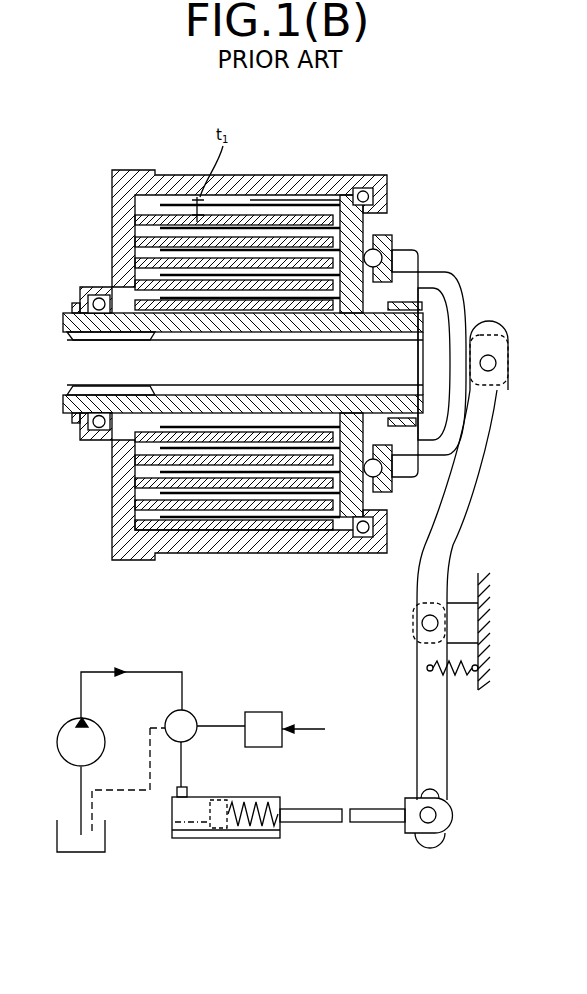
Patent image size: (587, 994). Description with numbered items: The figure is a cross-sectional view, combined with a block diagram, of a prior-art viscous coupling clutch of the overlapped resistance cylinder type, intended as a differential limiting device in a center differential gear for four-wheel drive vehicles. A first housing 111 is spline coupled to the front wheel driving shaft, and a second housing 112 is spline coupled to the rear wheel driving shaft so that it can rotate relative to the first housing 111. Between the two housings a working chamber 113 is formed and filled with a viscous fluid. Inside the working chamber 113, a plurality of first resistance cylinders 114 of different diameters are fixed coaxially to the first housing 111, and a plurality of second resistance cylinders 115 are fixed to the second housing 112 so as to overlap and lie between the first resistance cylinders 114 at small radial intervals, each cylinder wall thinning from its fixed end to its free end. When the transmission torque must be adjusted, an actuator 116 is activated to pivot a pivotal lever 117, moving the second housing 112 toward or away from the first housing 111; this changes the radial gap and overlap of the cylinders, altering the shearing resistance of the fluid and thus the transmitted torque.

The first housing 111 is at (130, 247).
The second housing 112 is at (355, 234).
The working chamber 113 is at (268, 196).
The first resistance cylinders 114 is at (147, 222).
The second resistance cylinders 115 is at (385, 210).
The actuator 116 is at (224, 845).
The pivotal lever 117 is at (478, 482).